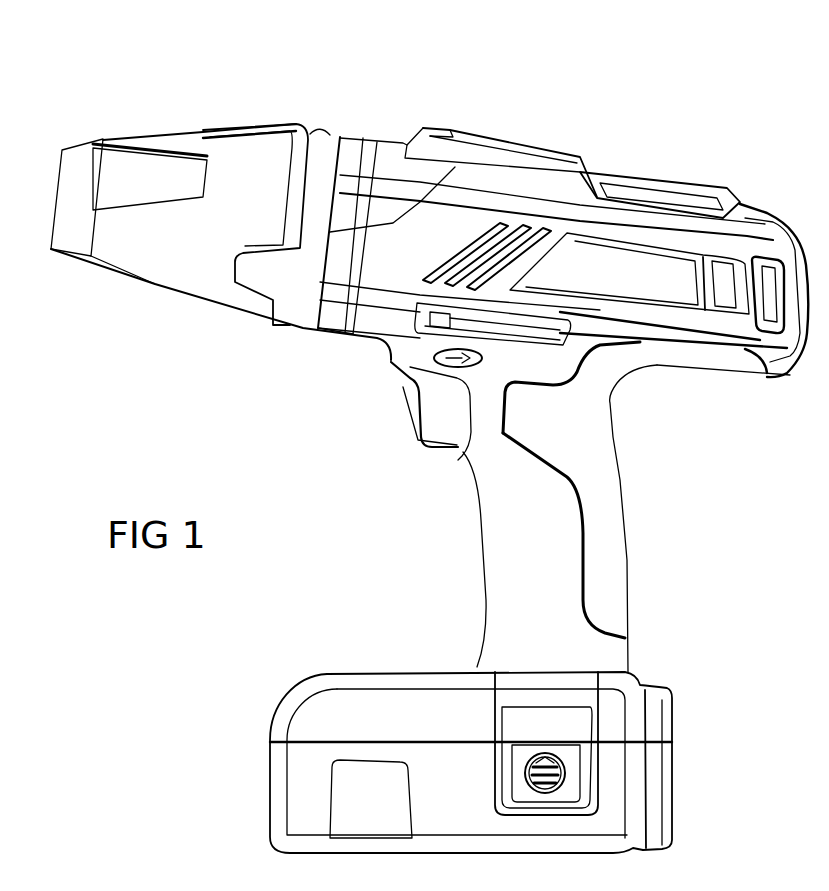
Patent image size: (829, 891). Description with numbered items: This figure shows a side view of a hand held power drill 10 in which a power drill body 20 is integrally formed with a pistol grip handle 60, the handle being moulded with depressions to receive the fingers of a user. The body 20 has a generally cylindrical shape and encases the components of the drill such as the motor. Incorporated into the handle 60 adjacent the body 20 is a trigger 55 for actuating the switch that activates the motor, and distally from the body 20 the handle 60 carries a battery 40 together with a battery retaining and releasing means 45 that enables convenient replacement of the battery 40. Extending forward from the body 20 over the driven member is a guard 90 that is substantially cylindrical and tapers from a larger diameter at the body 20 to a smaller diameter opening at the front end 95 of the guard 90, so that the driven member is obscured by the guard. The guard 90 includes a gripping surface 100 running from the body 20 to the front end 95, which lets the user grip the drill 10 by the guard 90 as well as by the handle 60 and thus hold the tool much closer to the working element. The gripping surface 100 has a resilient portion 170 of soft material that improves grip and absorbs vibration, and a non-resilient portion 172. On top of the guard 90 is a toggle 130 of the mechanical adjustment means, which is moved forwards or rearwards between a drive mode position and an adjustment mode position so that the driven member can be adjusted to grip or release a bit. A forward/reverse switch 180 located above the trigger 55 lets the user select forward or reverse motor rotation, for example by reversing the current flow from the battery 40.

The power drill 10 is at (692, 140).
The power drill body 20 is at (591, 172).
The battery 40 is at (672, 800).
The battery retaining and releasing means 45 is at (520, 760).
The trigger 55 is at (433, 410).
The pistol grip handle 60 is at (497, 532).
The guard 90 is at (183, 128).
The front end of the guard 95 is at (48, 228).
The gripping surface 100 is at (197, 306).
The toggle 130 is at (320, 130).
The resilient portion 170 is at (162, 240).
The non-resilient portion 172 is at (160, 174).
The forward/reverse switch 180 is at (430, 356).